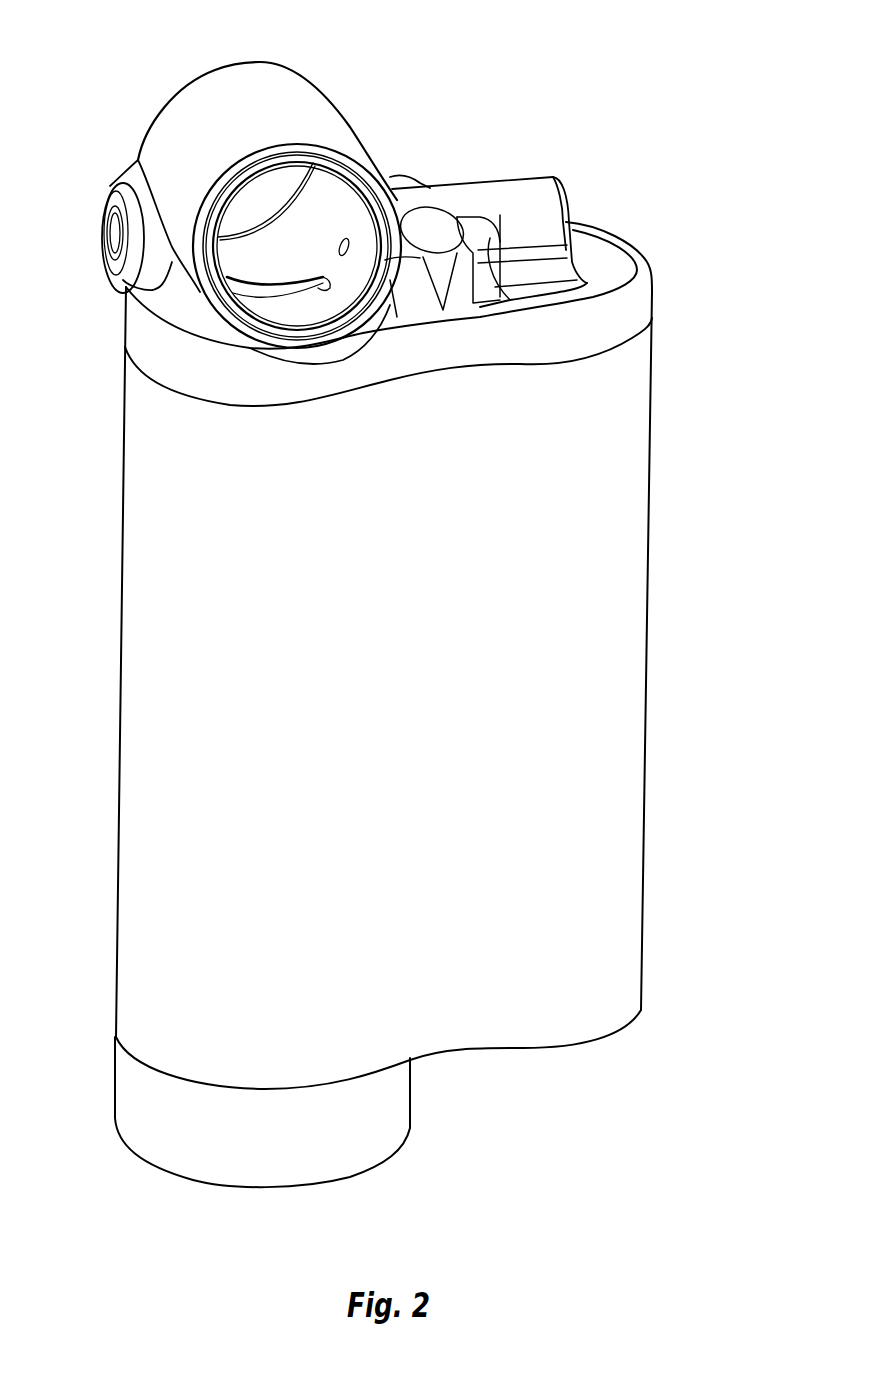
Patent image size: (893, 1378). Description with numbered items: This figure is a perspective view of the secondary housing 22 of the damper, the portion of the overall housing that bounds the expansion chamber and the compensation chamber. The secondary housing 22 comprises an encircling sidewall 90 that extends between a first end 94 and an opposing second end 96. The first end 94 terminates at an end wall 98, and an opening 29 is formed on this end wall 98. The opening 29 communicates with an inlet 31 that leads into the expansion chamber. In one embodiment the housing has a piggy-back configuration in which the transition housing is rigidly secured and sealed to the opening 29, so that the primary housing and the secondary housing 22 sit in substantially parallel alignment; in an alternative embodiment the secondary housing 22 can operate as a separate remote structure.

The secondary housing 22 is at (610, 512).
The opening 29 is at (330, 197).
The inlet 31 is at (285, 293).
The encircling sidewall 90 is at (627, 683).
The first end 94 is at (684, 301).
The second end 96 is at (676, 967).
The end wall 98 is at (493, 190).